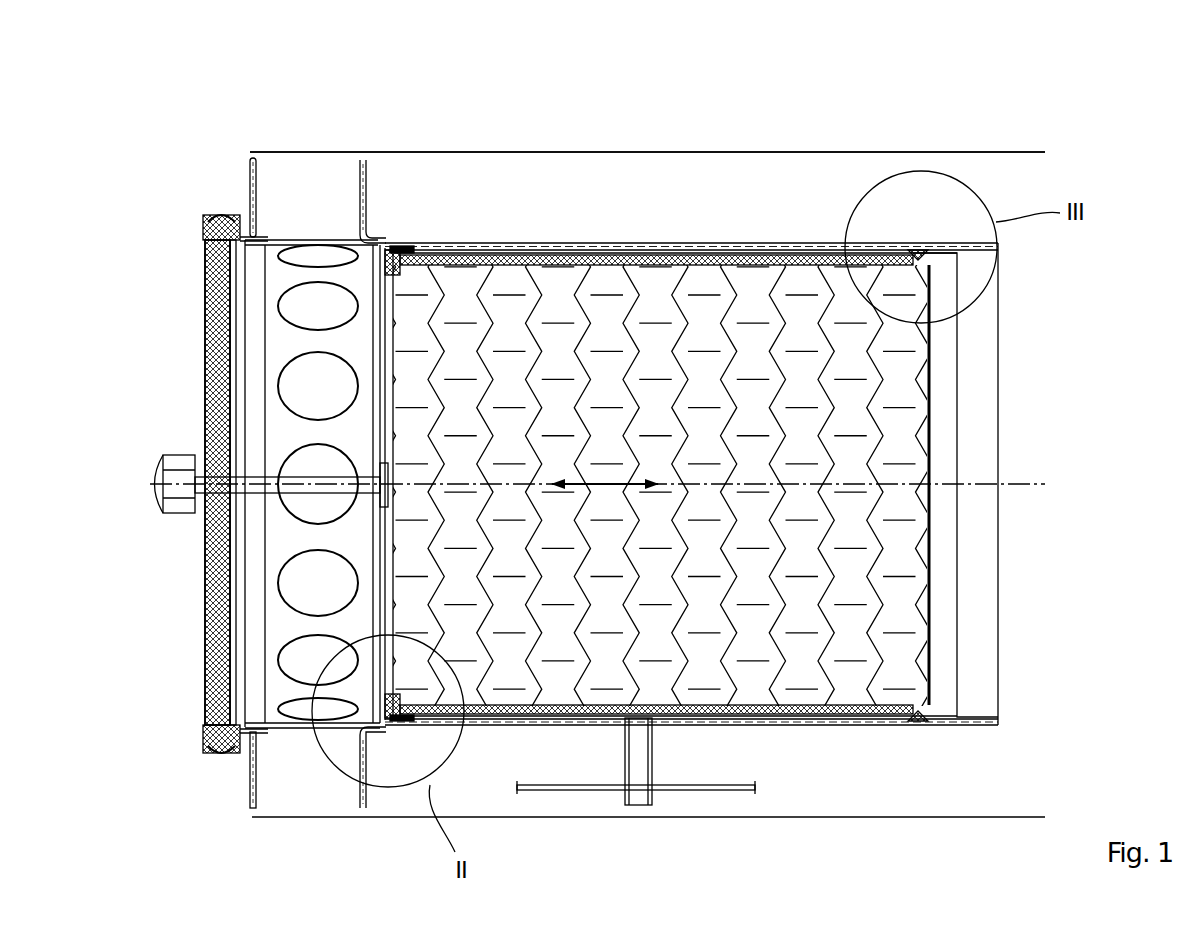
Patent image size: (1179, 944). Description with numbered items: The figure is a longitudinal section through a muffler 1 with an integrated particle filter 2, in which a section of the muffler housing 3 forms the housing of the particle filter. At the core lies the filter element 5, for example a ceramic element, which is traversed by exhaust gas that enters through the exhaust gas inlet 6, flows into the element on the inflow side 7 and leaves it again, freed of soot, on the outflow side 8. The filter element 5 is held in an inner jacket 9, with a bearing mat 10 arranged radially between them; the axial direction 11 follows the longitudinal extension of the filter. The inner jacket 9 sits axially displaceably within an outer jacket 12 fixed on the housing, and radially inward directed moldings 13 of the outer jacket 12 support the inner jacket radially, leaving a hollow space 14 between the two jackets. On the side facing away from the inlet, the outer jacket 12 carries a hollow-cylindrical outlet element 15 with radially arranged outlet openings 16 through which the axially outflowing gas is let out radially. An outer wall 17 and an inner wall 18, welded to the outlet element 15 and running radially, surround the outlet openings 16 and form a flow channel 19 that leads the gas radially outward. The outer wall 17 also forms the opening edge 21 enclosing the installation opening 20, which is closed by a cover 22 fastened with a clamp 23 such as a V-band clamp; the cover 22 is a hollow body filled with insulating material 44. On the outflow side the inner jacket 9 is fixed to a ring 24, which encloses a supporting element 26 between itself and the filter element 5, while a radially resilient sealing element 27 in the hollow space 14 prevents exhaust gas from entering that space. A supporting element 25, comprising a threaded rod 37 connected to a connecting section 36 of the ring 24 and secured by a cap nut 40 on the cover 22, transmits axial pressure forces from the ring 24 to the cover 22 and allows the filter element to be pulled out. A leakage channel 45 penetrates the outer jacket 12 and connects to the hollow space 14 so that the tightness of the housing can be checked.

The muffler 1 is at (1108, 155).
The particle filter 2 is at (164, 236).
The muffler housing 3 is at (650, 150).
The filter element 5 is at (695, 395).
The exhaust gas inlet 6 is at (986, 380).
The inflow side 7 is at (980, 764).
The outflow side 8 is at (392, 766).
The inner jacket 9 is at (596, 248).
The bearing mat 10 is at (695, 260).
The axial direction 11 is at (608, 482).
The outer jacket 12 is at (553, 241).
The moldings 13 is at (918, 244).
The hollow space 14 is at (762, 247).
The outlet element 15 is at (306, 237).
The outlet openings 16 is at (306, 319).
The outer wall 17 is at (253, 150).
The inner wall 18 is at (362, 158).
The flow channel 19 is at (288, 791).
The installation opening 20 is at (232, 550).
The opening edge 21 is at (238, 236).
The cover 22 is at (200, 358).
The clamp 23 is at (218, 214).
The ring 24 is at (376, 237).
The supporting element 25 is at (136, 468).
The supporting element 26 is at (393, 246).
The sealing element 27 is at (405, 247).
The connecting section 36 is at (380, 498).
The threaded rod 37 is at (278, 478).
The cap nut 40 is at (180, 460).
The insulating material 44 is at (210, 310).
The leakage channel 45 is at (637, 757).